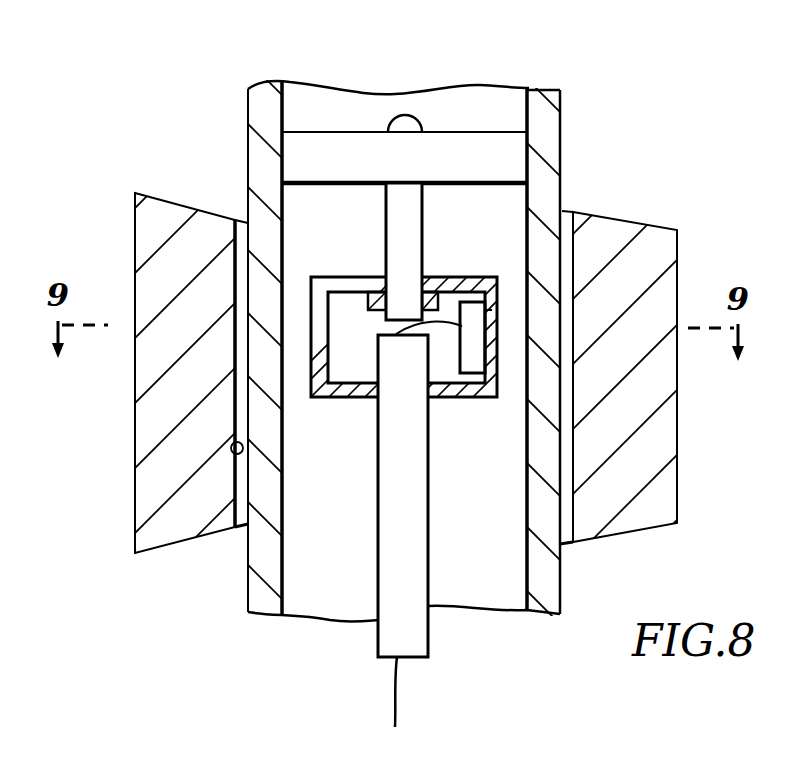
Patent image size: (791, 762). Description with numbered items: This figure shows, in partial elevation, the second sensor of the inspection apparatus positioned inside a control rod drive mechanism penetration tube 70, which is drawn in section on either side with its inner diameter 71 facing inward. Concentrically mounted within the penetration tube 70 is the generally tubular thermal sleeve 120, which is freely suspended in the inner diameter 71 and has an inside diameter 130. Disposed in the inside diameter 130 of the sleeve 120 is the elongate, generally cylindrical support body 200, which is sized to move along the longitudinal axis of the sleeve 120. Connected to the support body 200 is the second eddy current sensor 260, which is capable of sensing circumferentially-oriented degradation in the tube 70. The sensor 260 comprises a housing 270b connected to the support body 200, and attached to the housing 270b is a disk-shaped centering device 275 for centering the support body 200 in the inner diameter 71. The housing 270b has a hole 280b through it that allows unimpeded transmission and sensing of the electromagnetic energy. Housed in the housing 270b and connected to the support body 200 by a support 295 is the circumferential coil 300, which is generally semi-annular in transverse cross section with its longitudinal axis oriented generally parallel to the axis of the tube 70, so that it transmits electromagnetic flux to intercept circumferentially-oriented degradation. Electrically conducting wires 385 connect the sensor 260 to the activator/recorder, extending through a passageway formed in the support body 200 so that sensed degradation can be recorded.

The control rod drive mechanism penetration tube 70 is at (158, 412).
The inner diameter 71 is at (232, 450).
The thermal sleeve 120 is at (267, 110).
The inside diameter 130 is at (285, 97).
The support body 200 is at (378, 636).
The second eddy current sensor 260 is at (352, 277).
The housing 270b is at (355, 397).
The centering device 275 is at (478, 148).
The hole 280b is at (497, 317).
The support 295 is at (441, 338).
The circumferential coil 300 is at (468, 352).
The electrically conducting wires 385 is at (440, 322).